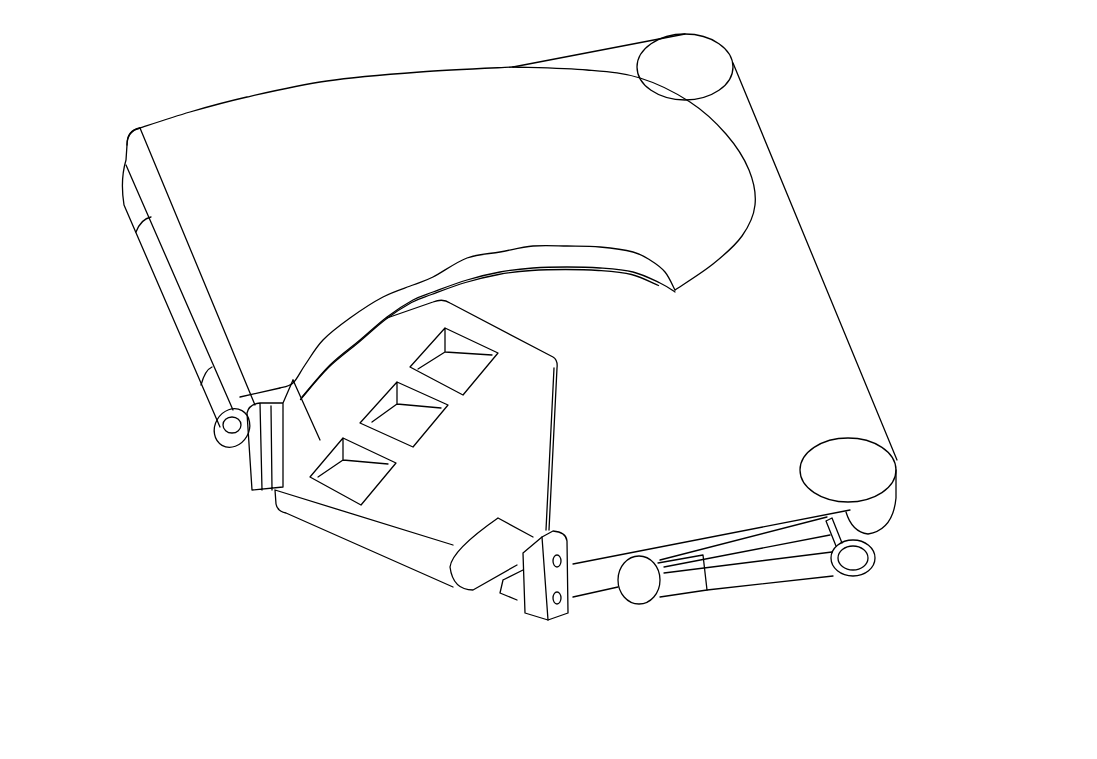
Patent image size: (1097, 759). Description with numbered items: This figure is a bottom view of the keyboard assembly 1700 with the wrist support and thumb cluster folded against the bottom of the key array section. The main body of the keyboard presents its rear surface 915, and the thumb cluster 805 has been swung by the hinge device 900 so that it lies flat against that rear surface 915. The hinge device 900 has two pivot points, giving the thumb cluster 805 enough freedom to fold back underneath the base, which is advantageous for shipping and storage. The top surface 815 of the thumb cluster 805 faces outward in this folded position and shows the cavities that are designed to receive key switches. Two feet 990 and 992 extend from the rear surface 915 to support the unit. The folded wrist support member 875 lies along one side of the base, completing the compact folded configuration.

The device assembly 1700 is at (111, 183).
The arm 875 is at (166, 289).
The rear surface 915 is at (773, 275).
The foot 990 is at (717, 72).
The foot 992 is at (848, 468).
The thumb cluster 805 is at (302, 520).
The top surface 815 is at (408, 493).
The hinge device 900 is at (566, 620).